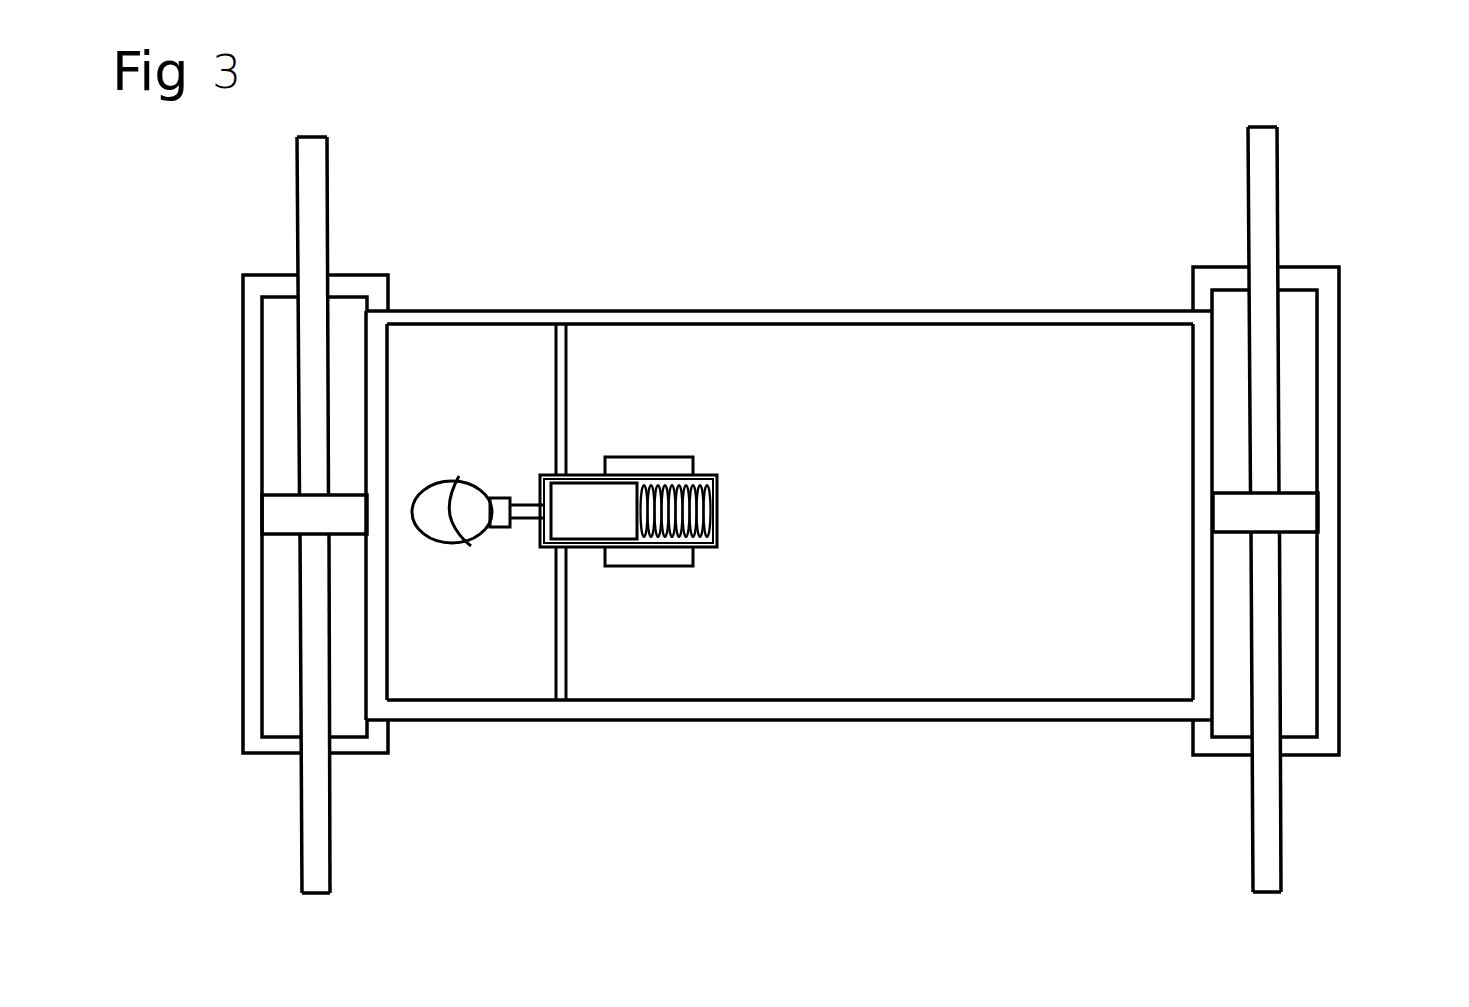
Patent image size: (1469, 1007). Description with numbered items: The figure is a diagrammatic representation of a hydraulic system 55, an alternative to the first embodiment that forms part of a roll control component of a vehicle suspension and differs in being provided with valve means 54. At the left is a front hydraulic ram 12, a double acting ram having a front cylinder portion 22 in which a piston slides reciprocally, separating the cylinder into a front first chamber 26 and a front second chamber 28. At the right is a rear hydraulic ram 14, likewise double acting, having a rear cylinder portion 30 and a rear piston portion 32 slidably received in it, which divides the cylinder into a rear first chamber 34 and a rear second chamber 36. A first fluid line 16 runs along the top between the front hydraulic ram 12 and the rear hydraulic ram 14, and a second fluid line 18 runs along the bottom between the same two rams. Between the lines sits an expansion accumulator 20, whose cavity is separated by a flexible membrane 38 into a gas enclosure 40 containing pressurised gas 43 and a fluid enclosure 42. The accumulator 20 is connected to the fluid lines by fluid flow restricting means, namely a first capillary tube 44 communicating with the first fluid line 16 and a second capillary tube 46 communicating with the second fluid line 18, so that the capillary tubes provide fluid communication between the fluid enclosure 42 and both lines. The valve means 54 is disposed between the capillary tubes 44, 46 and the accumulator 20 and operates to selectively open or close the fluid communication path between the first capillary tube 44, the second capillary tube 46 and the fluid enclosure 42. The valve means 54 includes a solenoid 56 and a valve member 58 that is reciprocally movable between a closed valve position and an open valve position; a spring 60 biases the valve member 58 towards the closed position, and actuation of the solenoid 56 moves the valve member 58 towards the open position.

The front hydraulic ram 12 is at (257, 515).
The rear hydraulic ram 14 is at (1307, 509).
The first fluid line 16 is at (967, 308).
The second fluid line 18 is at (862, 700).
The expansion accumulator 20 is at (463, 551).
The front cylinder portion 22 is at (243, 344).
The front first chamber 26 is at (347, 302).
The front second chamber 28 is at (272, 673).
The rear cylinder portion 30 is at (1328, 330).
The rear piston portion 32 is at (1272, 858).
The rear first chamber 34 is at (1222, 300).
The rear second chamber 36 is at (1312, 677).
The flexible membrane 38 is at (458, 528).
The gas enclosure 40 is at (413, 527).
The fluid enclosure 42 is at (480, 488).
The pressurised gas 43 is at (427, 498).
The first capillary tube 44 is at (566, 393).
The second capillary tube 46 is at (566, 667).
The valve means 54 is at (671, 495).
The hydraulic system 55 is at (792, 778).
The solenoid 56 is at (693, 462).
The valve member 58 is at (592, 523).
The spring 60 is at (712, 520).